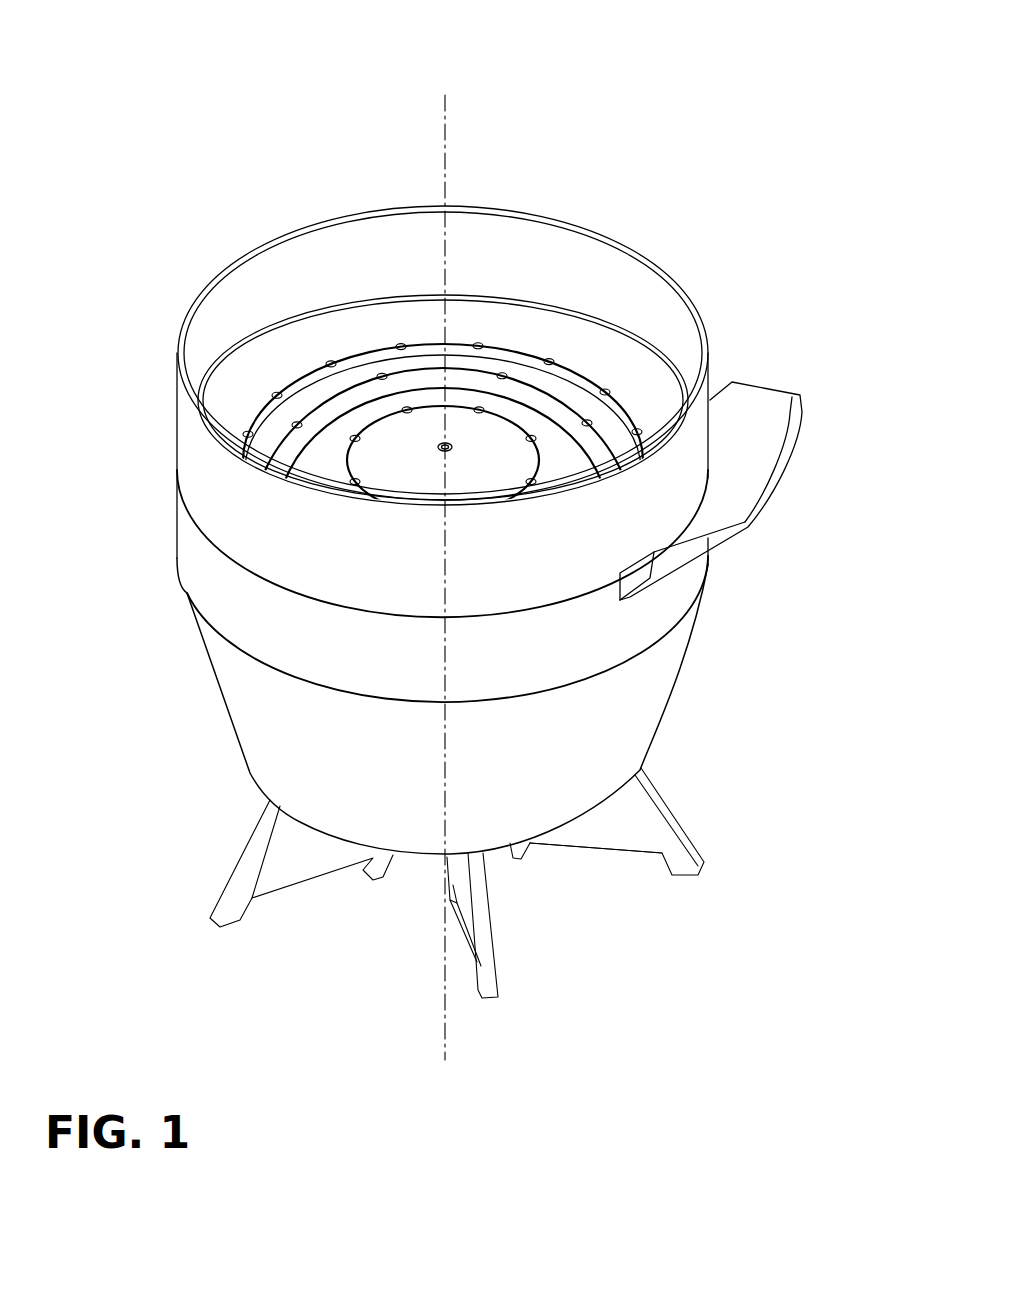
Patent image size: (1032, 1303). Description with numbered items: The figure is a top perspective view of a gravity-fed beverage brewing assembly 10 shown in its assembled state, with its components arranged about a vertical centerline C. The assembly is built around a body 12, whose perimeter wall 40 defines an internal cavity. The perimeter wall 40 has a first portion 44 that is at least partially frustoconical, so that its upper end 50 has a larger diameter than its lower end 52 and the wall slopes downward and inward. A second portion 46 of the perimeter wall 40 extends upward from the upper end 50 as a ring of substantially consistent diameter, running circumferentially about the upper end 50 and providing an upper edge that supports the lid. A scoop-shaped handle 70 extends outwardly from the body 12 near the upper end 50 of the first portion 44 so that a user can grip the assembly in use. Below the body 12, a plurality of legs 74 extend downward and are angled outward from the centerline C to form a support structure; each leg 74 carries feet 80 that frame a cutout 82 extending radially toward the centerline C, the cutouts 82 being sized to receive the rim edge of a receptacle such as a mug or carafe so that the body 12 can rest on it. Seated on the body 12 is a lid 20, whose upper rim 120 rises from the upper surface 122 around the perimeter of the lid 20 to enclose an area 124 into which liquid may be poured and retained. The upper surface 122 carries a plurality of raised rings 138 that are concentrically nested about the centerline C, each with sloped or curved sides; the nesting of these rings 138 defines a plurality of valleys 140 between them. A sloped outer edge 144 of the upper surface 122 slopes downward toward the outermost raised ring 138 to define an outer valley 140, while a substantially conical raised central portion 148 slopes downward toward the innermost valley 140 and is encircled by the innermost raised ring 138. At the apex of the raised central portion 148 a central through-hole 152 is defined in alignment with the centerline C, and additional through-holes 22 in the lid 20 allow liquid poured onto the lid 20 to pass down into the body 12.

The gravity-fed beverage brewing assembly 10 is at (638, 165).
The centerline C is at (445, 122).
The body 12 is at (623, 693).
The lid 20 is at (235, 284).
The through-holes 22 is at (530, 425).
The perimeter wall 40 is at (240, 683).
The first portion 44 is at (303, 755).
The second portion 46 is at (210, 497).
The upper end 50 is at (187, 593).
The lower end 52 is at (643, 767).
The handle 70 is at (757, 442).
The legs 74 is at (626, 818).
The feet 80 is at (680, 863).
The cutout 82 is at (608, 857).
The upper rim 120 is at (697, 432).
The upper surface 122 is at (645, 385).
The area 124 is at (570, 272).
The raised rings 138 is at (267, 455).
The valleys 140 is at (382, 407).
The sloped outer edge 144 is at (587, 347).
The raised central portion 148 is at (402, 478).
The central through-hole 152 is at (437, 437).